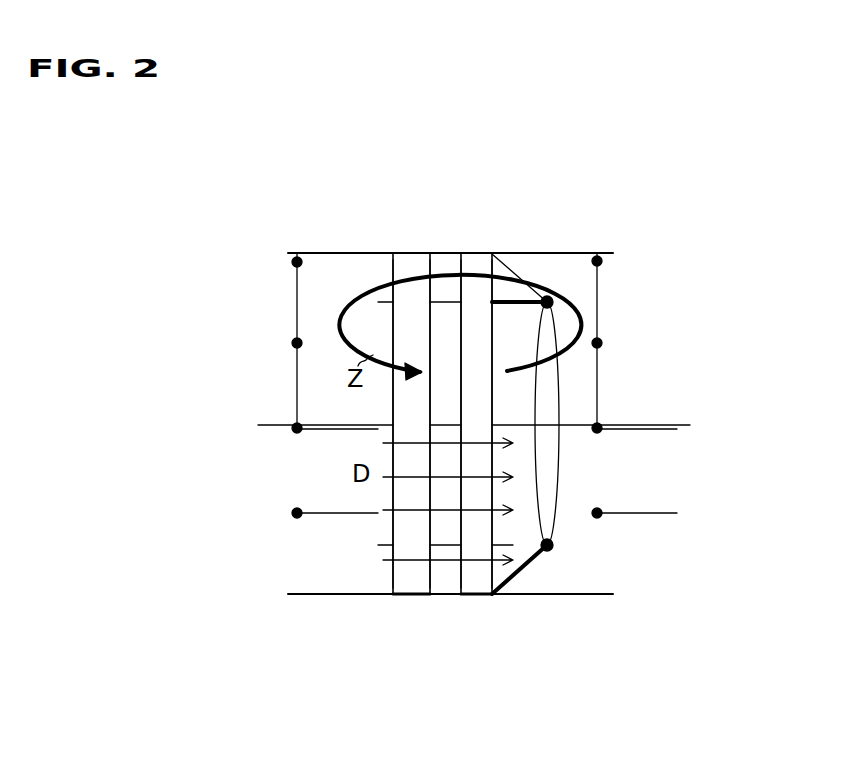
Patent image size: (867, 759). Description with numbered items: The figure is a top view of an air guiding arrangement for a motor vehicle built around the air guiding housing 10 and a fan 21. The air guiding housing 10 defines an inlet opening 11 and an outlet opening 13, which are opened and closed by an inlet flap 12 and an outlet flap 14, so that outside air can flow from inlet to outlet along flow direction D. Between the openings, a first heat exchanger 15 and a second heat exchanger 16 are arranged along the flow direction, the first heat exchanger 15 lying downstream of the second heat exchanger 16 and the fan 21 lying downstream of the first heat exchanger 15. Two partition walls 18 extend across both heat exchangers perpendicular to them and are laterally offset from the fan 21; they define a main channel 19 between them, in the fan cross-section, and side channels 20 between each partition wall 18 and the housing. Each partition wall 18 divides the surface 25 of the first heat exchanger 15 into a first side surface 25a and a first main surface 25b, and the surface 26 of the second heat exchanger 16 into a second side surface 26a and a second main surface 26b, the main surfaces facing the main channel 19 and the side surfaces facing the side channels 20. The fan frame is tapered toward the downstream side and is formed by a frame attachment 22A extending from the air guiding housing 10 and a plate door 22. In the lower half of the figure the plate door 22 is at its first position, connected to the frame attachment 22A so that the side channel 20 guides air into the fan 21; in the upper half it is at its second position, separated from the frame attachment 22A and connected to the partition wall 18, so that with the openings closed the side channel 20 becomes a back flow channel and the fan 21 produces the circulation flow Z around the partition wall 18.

The air guiding housing 10 is at (627, 245).
The inlet opening 11 is at (323, 292).
The inlet flap 12 is at (294, 320).
The outlet opening 13 is at (577, 288).
The outlet flap 14 is at (598, 317).
The first heat exchanger 15 is at (477, 578).
The second heat exchanger 16 is at (412, 578).
The partition wall 18 is at (378, 302).
The main channel 19 is at (458, 392).
The side channel 20 is at (438, 266).
The fan 21 is at (548, 392).
The plate door 22 is at (524, 300).
The frame attachment 22A is at (507, 298).
The surface of the first heat exchanger 25 is at (463, 421).
The first side surface 25a is at (461, 272).
The first main surface 25b is at (461, 325).
The surface of the second heat exchanger 26 is at (361, 421).
The second side surface 26a is at (393, 273).
The second main surface 26b is at (393, 323).